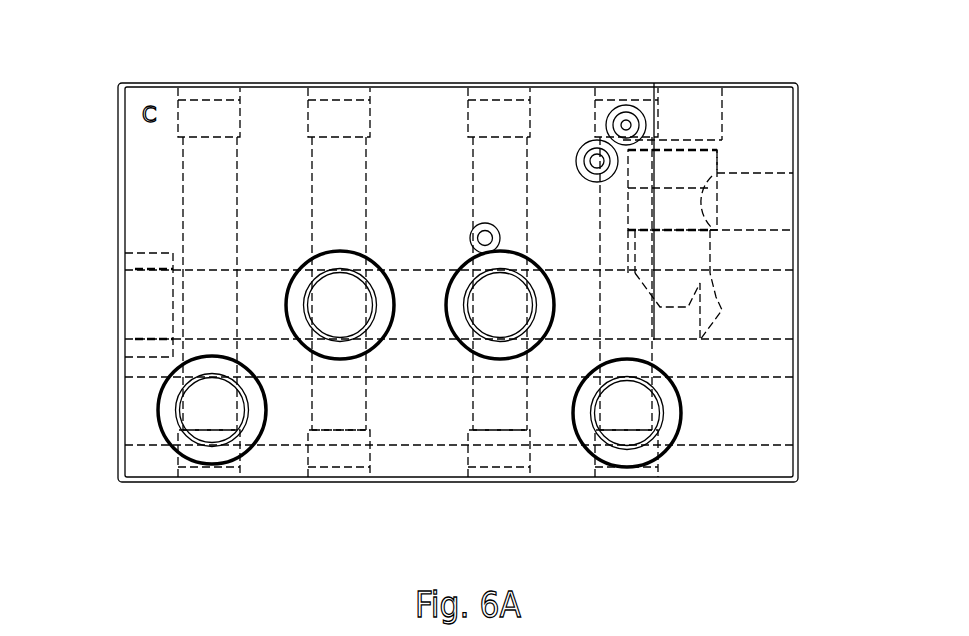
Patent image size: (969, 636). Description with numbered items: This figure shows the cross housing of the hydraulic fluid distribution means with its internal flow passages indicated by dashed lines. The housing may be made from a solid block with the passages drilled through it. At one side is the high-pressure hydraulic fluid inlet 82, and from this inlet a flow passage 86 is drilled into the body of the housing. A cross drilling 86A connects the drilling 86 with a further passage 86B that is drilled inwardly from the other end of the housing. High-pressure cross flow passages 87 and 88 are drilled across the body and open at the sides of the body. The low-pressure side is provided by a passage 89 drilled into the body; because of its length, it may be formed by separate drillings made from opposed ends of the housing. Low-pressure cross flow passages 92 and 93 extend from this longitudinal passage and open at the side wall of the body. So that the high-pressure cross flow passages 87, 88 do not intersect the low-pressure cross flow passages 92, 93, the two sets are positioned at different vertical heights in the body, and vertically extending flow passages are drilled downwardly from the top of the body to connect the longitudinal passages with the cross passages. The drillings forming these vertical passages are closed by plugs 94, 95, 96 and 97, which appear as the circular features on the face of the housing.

The high-pressure hydraulic fluid inlet 82 is at (800, 197).
The flow passage 86 is at (747, 175).
The cross drilling 86A is at (642, 263).
The passage 86B is at (276, 268).
The cross flow passage 87 is at (472, 413).
The cross flow passage 88 is at (363, 412).
The flow passage 89 is at (757, 438).
The cross flow passage 92 is at (235, 180).
The cross flow passage 93 is at (600, 200).
The plug 94 is at (393, 283).
The plug 95 is at (540, 280).
The plug 96 is at (667, 433).
The plug 97 is at (210, 453).